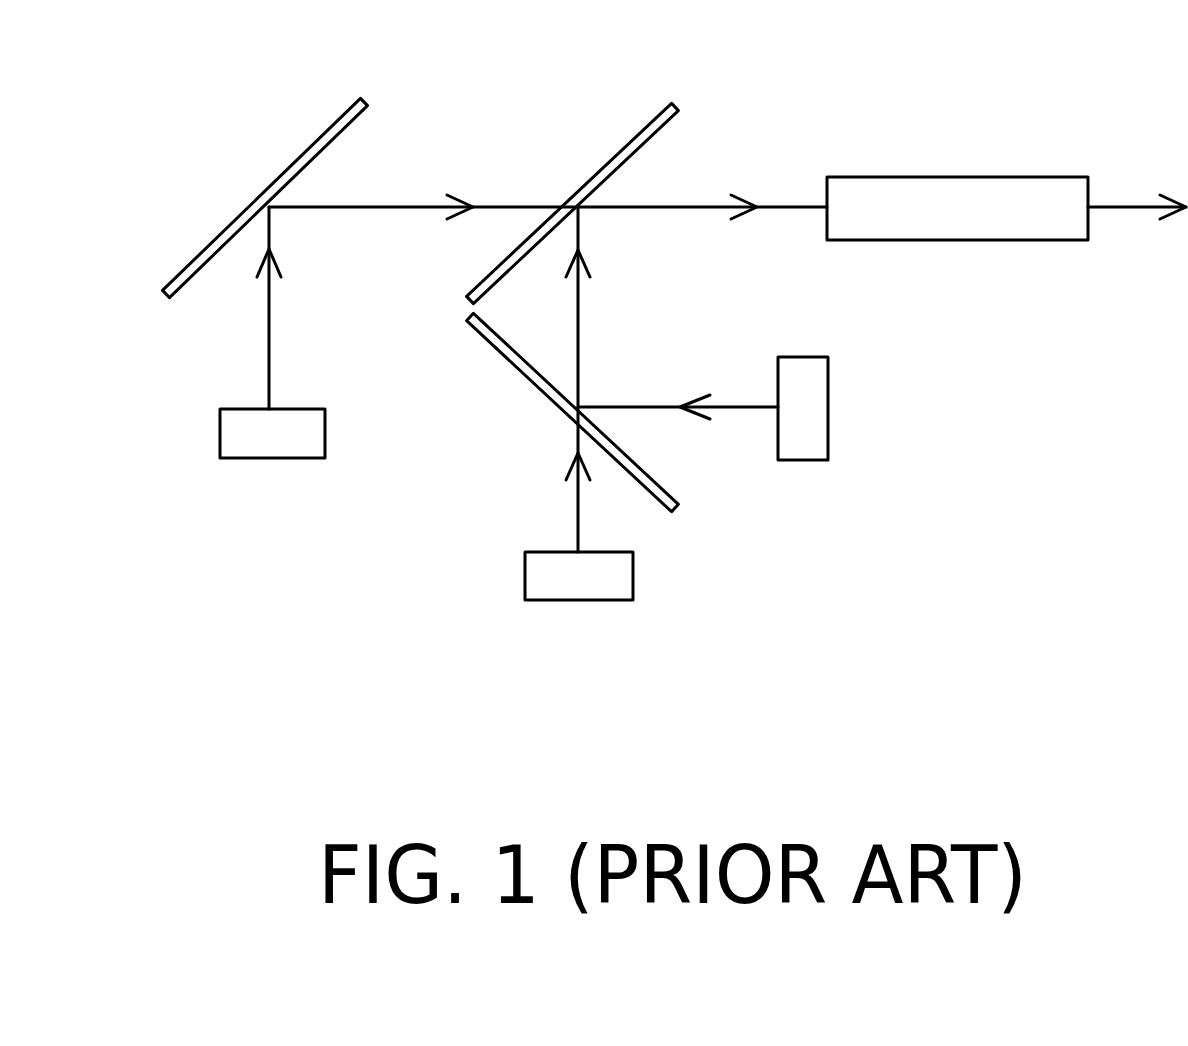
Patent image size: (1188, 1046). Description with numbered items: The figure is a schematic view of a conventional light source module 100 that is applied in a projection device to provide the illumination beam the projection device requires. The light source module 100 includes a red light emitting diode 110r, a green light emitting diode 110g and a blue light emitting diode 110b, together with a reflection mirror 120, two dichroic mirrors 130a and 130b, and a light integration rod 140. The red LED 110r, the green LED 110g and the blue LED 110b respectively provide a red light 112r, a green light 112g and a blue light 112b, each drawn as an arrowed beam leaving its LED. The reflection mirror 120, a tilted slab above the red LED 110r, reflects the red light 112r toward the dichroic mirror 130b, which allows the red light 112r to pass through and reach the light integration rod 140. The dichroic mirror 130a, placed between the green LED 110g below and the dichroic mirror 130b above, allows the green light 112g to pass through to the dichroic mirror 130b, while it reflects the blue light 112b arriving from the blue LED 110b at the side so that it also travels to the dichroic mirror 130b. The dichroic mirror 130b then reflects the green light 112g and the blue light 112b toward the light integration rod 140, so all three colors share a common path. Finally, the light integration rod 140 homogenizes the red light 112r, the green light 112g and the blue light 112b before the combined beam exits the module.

The light source module 100 is at (675, 369).
The red light emitting diode 110r is at (278, 443).
The green light emitting diode 110g is at (587, 585).
The blue light emitting diode 110b is at (815, 405).
The red light 112r is at (271, 305).
The green light 112g is at (577, 515).
The blue light 112b is at (650, 406).
The reflection mirror 120 is at (330, 126).
The dichroic mirror 130a is at (658, 490).
The dichroic mirror 130b is at (643, 128).
The light integration rod 140 is at (947, 193).